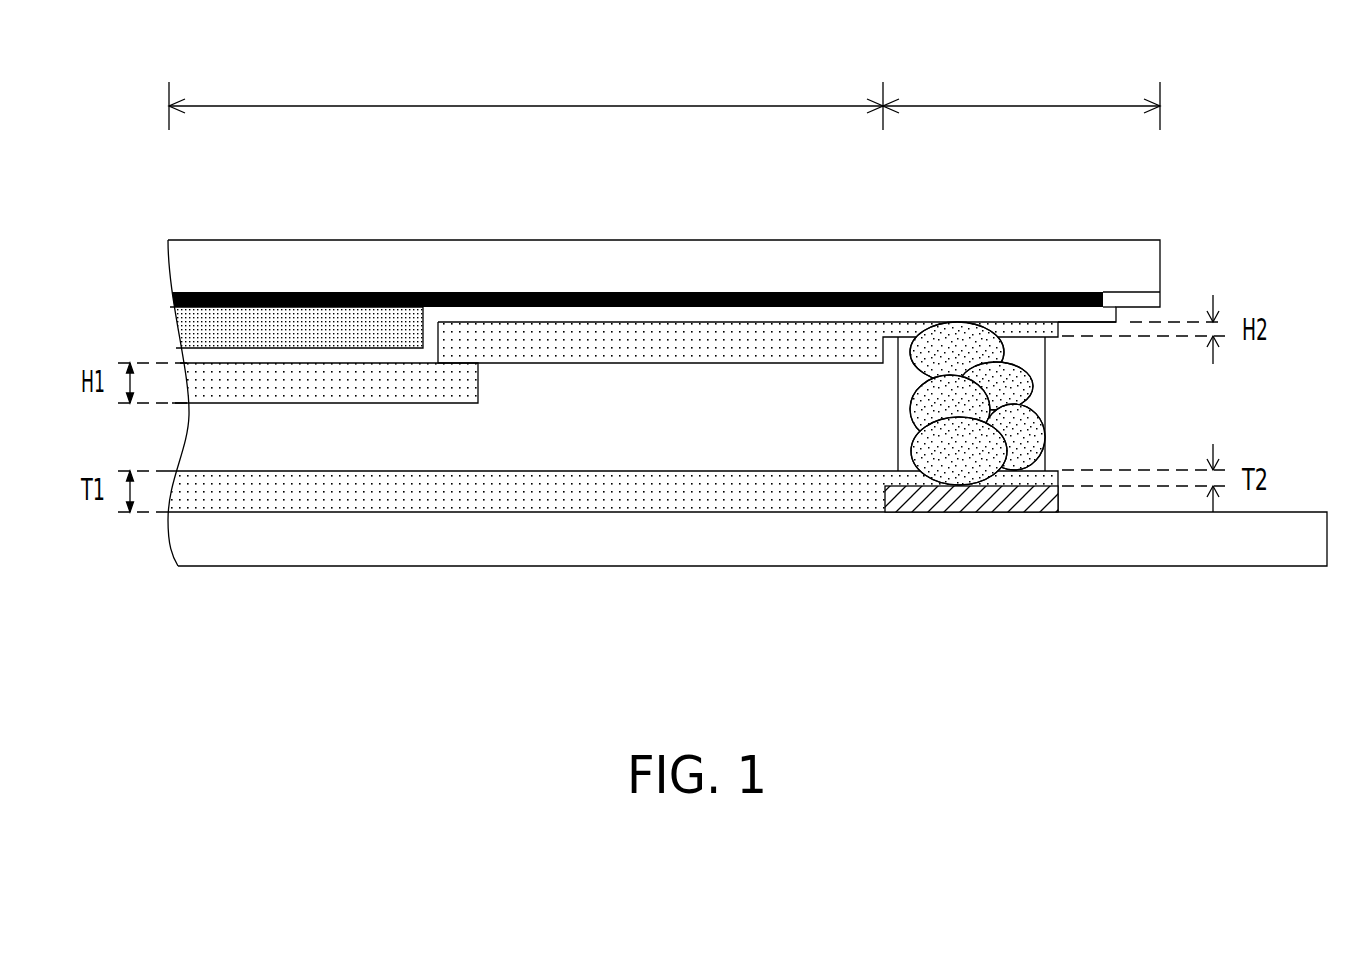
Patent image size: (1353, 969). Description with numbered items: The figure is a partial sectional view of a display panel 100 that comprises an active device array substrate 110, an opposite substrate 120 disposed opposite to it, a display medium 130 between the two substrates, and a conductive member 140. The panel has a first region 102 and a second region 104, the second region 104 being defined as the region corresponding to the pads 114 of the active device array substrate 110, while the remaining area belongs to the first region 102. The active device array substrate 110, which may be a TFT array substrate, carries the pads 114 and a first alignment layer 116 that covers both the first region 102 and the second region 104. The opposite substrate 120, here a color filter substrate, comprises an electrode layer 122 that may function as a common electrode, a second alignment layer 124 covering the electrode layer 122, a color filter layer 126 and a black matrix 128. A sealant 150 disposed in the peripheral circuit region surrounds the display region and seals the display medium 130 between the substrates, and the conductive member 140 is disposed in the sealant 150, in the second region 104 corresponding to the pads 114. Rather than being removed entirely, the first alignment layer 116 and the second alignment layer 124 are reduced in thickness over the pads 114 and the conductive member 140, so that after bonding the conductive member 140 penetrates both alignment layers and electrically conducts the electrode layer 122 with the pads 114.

The display panel 100 is at (1340, 646).
The first region 102 is at (526, 94).
The second region 104 is at (1021, 94).
The active device array substrate 110 is at (148, 538).
The pad 114 is at (965, 495).
The first alignment layer 116 is at (507, 492).
The opposite substrate 120 is at (140, 302).
The electrode layer 122 is at (817, 314).
The second alignment layer 124 is at (697, 342).
The color filter layer 126 is at (302, 328).
The black matrix 128 is at (518, 292).
The display medium 130 is at (683, 430).
The conductive member 140 is at (1032, 435).
The sealant 150 is at (1031, 358).